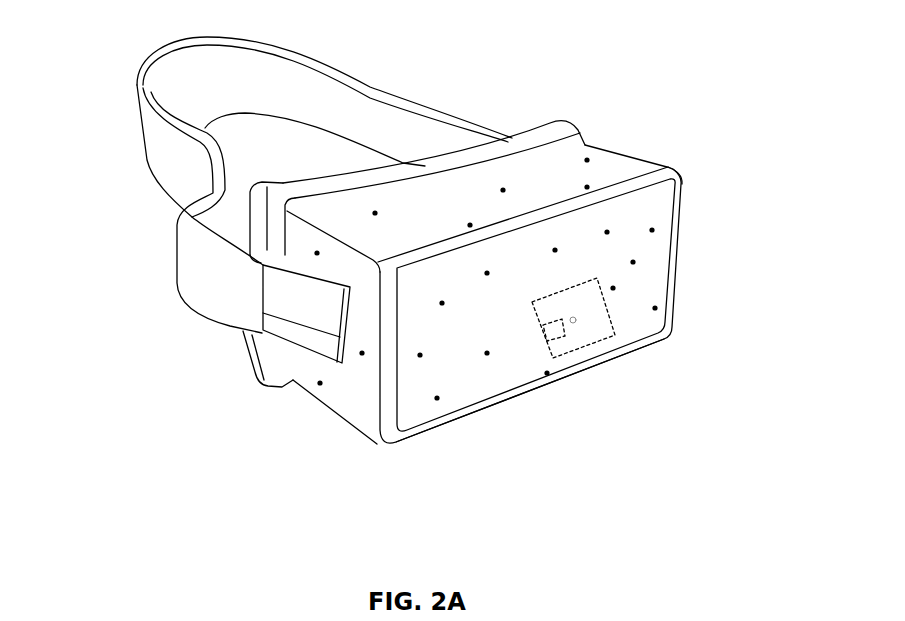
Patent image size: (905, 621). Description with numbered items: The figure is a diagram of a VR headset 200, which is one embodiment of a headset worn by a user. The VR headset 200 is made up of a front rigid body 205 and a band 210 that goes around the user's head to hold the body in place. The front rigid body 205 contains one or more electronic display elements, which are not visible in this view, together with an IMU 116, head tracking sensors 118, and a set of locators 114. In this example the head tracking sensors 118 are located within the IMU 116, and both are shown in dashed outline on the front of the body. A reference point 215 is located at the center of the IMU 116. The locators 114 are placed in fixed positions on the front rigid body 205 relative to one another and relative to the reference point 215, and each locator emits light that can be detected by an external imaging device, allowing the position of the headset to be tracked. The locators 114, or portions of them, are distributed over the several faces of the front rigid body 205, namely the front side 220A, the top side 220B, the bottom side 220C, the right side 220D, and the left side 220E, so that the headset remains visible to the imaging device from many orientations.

The VR headset 200 is at (28, 37).
The band 210 is at (333, 201).
The front rigid body 205 is at (465, 307).
The front side 220A is at (534, 367).
The top side 220B is at (323, 171).
The bottom side 220C is at (409, 410).
The right side 220D is at (333, 374).
The left side 220E is at (633, 115).
The locators 114 is at (585, 278).
The IMU 116 is at (700, 381).
The head tracking sensors 118 is at (520, 443).
The reference point 215 is at (643, 406).